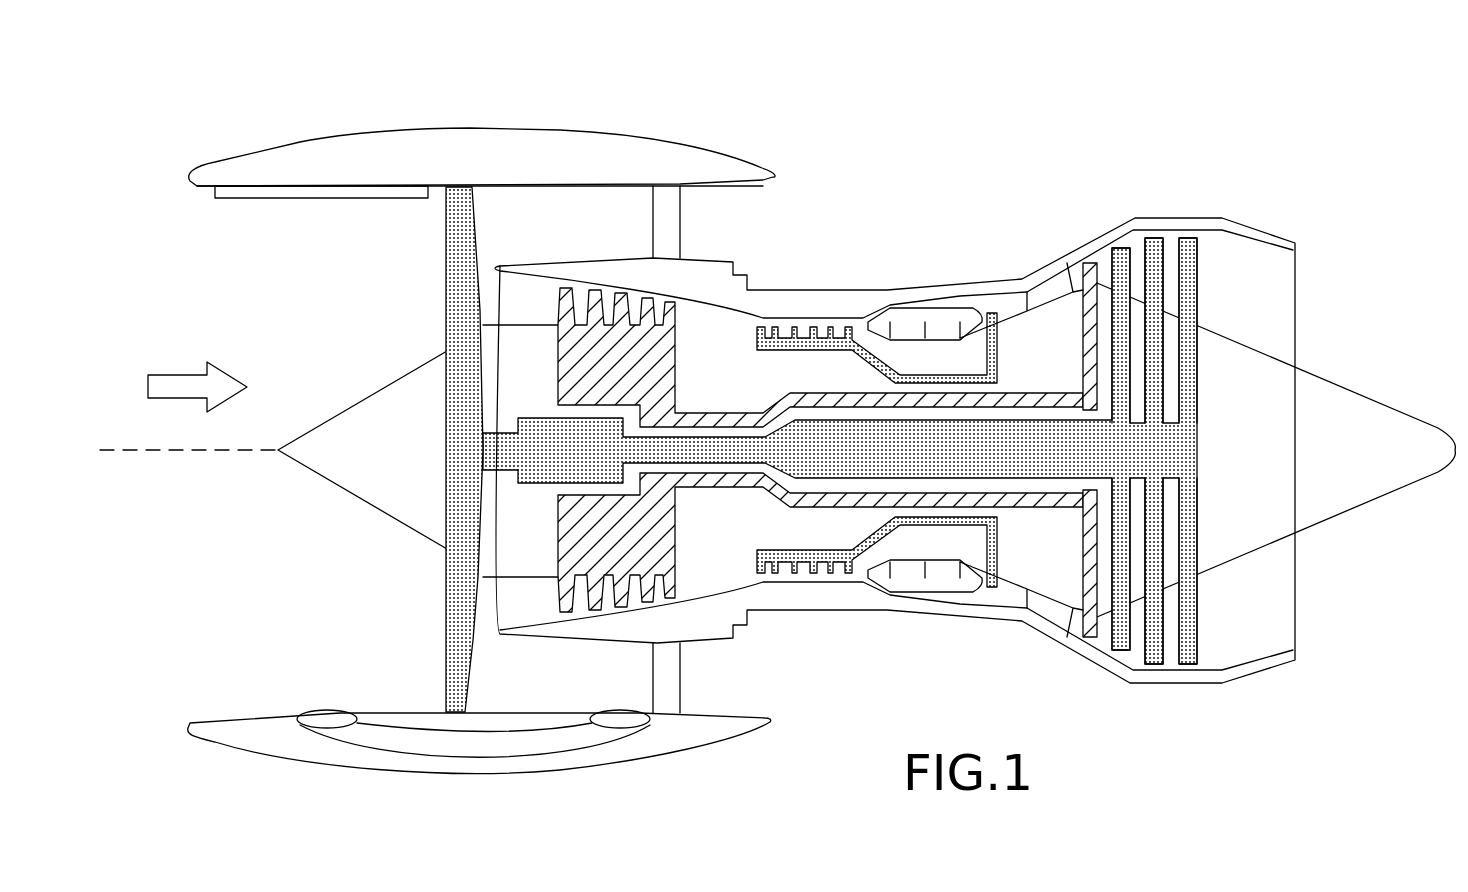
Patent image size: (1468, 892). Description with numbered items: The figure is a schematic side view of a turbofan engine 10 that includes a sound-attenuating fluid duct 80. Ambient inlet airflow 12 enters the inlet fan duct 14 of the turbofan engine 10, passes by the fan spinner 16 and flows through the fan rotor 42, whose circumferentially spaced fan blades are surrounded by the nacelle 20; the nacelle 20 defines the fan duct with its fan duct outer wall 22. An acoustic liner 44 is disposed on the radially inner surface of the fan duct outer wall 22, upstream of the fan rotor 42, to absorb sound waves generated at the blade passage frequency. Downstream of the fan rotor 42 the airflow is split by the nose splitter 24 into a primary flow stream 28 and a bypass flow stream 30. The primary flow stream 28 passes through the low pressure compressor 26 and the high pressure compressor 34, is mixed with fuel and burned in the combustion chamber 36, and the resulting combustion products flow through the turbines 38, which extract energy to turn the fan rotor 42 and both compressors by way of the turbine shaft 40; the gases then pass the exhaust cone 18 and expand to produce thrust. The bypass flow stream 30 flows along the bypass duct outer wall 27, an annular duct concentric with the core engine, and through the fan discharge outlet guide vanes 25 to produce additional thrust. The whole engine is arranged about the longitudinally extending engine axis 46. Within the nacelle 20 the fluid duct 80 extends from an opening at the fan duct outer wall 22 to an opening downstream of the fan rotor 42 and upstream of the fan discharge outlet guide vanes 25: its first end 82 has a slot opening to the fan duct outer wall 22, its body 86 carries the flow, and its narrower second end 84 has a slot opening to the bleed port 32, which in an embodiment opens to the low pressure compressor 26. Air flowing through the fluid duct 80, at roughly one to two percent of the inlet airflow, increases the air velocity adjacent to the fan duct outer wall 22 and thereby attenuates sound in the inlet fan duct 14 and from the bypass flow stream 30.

The turbofan engine 10 is at (920, 84).
The ambient inlet airflow 12 is at (177, 387).
The inlet fan duct 14 is at (269, 325).
The fan spinner 16 is at (351, 409).
The exhaust cone 18 is at (1310, 407).
The nacelle 20 is at (280, 168).
The fan duct outer wall 22 is at (353, 185).
The nose splitter 24 is at (500, 267).
The fan discharge outlet guide vanes 25 is at (663, 677).
The low pressure compressor 26 is at (657, 310).
The bypass duct outer wall 27 is at (613, 185).
The primary flow stream 28 is at (535, 307).
The bypass flow stream 30 is at (720, 201).
The bleed port 32 is at (717, 580).
The high pressure compressor 34 is at (810, 324).
The combustion chamber 36 is at (928, 313).
The turbines 38 is at (1167, 270).
The turbine shaft 40 is at (1062, 480).
The fan rotor 42 is at (446, 238).
The acoustic liner 44 is at (263, 190).
The engine axis 46 is at (178, 454).
The fluid duct 80 is at (383, 747).
The first end 82 is at (320, 717).
The second end 84 is at (620, 717).
The body 86 is at (557, 747).